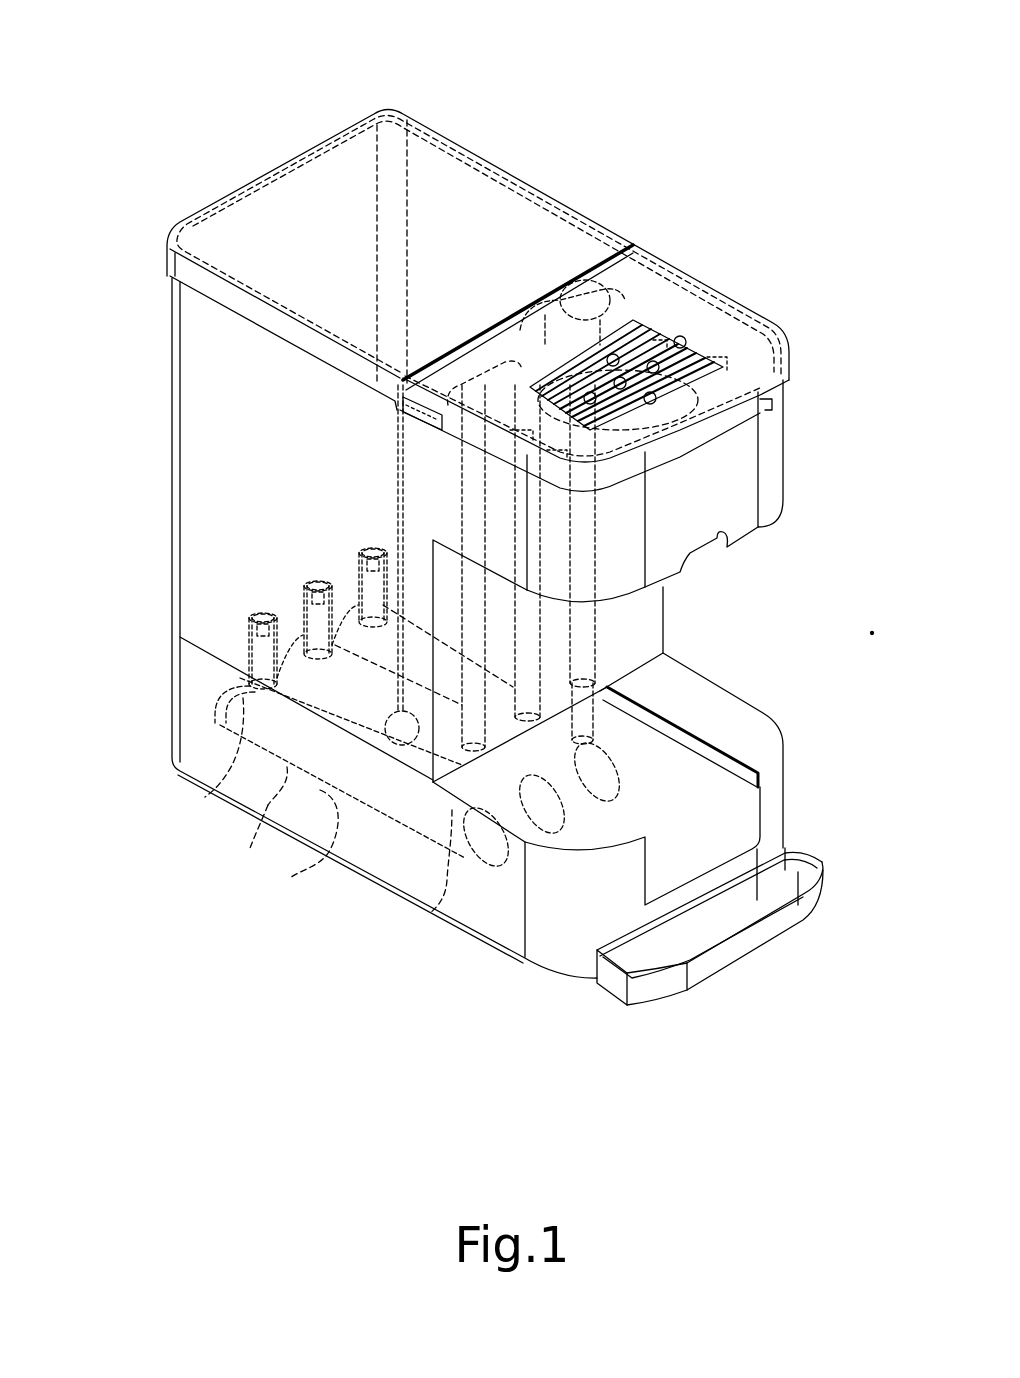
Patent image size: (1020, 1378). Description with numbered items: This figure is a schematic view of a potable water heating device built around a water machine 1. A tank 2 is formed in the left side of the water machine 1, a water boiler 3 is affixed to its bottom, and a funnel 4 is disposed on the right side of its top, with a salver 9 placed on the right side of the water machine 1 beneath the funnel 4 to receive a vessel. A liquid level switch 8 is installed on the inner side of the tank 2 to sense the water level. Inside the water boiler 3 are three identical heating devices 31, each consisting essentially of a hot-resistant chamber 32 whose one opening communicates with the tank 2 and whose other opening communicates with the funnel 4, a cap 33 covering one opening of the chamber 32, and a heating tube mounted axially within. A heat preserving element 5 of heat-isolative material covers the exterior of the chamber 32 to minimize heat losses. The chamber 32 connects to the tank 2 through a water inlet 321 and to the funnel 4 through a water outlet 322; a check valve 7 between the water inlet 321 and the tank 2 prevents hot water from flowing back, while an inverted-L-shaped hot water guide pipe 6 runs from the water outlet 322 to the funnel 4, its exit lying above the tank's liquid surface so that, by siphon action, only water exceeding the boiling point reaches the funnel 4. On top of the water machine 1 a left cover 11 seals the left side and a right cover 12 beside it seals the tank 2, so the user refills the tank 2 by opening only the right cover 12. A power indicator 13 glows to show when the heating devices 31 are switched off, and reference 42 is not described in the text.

The water machine 1 is at (169, 455).
The tank 2 is at (488, 225).
The water boiler 3 is at (172, 686).
The funnel 4 is at (697, 440).
The heat preserving element 5 is at (320, 790).
The hot water guide pipe 6 is at (607, 292).
The check valve 7 is at (250, 640).
The liquid level switch 8 is at (390, 528).
The salver 9 is at (740, 822).
The left cover 11 is at (704, 283).
The right cover 12 is at (407, 117).
The power indicator 13 is at (772, 402).
The heating device 31 is at (285, 790).
The chamber 32 is at (470, 850).
The cap 33 is at (215, 725).
The drain grid 42 is at (715, 418).
The water inlet 321 is at (228, 780).
The water outlet 322 is at (437, 905).